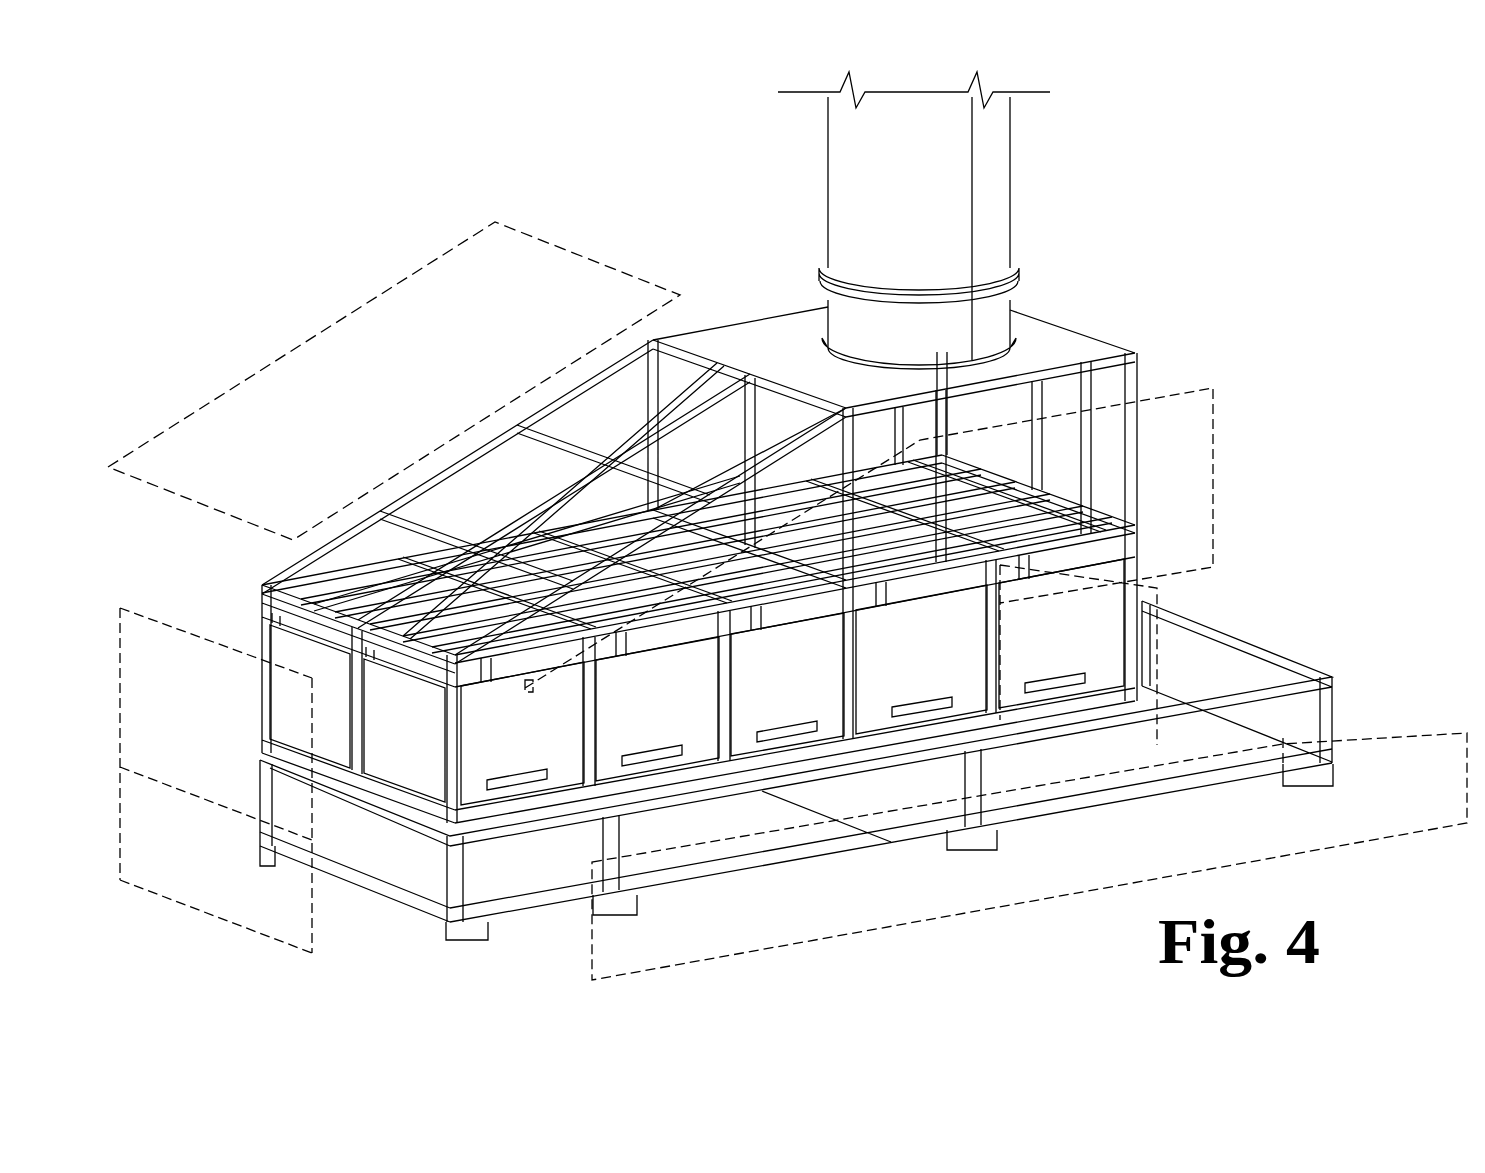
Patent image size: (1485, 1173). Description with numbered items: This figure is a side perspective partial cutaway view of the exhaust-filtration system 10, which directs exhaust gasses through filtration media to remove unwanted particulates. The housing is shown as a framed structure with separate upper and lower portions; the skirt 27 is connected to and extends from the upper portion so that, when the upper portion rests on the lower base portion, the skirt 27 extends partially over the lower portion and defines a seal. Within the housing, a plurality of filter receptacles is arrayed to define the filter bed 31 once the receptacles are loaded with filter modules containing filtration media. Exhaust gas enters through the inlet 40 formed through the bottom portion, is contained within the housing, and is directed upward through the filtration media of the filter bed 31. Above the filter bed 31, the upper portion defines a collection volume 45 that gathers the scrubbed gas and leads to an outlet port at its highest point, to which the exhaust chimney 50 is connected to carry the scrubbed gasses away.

The system 10 is at (330, 238).
The skirt 27 is at (118, 640).
The filter bed 31 is at (445, 516).
The inlet 40 is at (414, 880).
The collection volume 45 is at (1229, 92).
The exhaust chimney 50 is at (1000, 180).